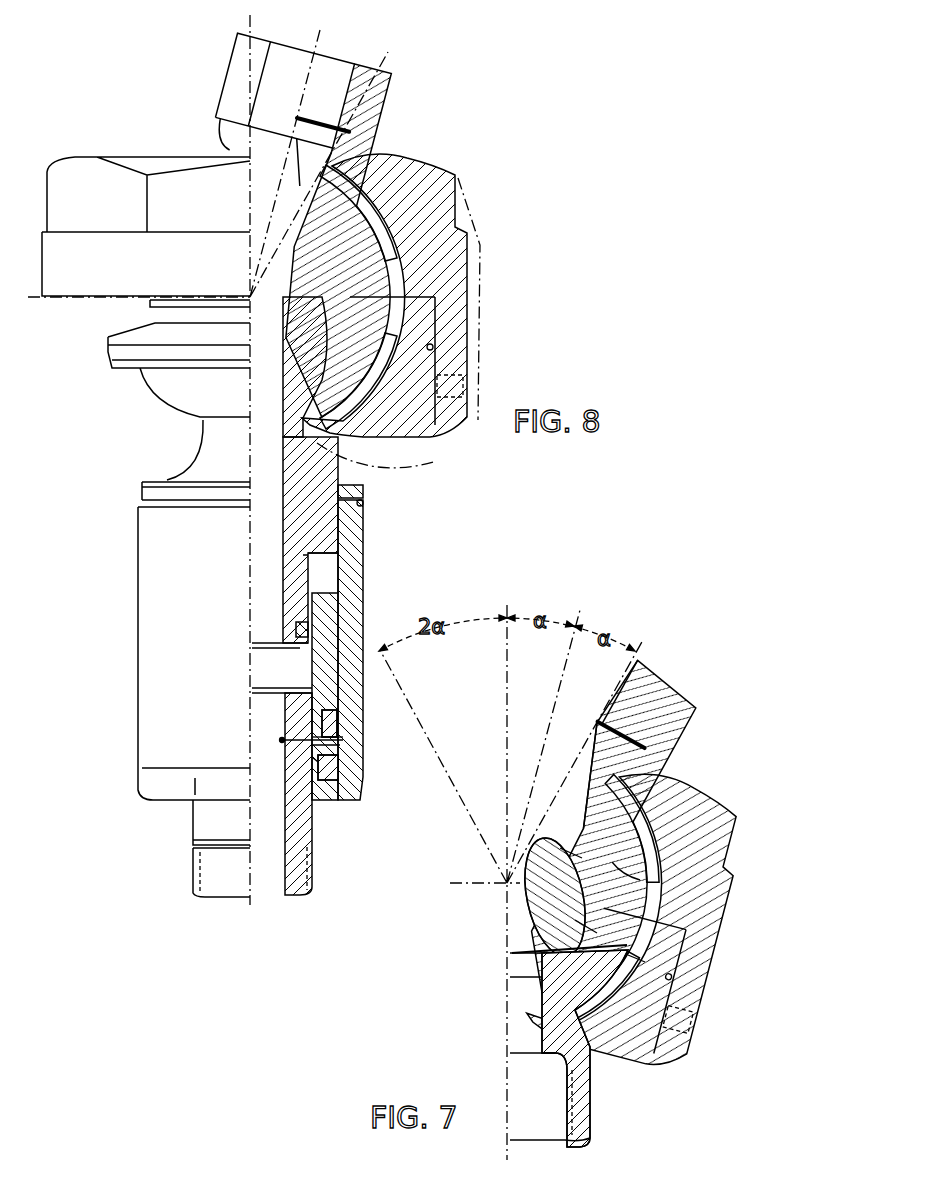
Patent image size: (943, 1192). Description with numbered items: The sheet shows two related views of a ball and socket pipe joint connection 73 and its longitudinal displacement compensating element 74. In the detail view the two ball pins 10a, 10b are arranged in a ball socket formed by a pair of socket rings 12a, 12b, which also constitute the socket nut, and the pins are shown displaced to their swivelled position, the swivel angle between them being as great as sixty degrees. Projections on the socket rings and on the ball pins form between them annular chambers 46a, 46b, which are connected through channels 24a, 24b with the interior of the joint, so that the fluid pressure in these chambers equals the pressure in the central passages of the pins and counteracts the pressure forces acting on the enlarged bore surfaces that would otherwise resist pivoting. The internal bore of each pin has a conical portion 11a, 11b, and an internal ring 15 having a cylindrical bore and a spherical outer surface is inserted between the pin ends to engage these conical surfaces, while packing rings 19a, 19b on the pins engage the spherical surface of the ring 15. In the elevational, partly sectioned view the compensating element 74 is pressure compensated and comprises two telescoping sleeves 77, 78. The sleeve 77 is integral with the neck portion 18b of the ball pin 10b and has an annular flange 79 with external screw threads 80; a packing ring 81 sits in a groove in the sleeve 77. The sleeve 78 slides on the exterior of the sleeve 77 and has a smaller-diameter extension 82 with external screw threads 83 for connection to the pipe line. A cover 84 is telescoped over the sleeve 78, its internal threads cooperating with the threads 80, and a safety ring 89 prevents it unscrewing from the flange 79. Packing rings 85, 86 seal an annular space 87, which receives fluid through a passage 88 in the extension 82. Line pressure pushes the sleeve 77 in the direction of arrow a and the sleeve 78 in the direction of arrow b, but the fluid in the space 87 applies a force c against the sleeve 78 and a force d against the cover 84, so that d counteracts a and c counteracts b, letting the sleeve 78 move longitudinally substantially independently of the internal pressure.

In FIG. 8, the ball and socket pipe joint connection 73 is at (60, 150).
In FIG. 7, the ball and socket pipe joint connection 73 is at (703, 1007).
In FIG. 8, the ball pin 10a is at (327, 217).
In FIG. 7, the ball pin 10a is at (600, 817).
In FIG. 8, the ball pin 10b is at (303, 395).
In FIG. 7, the ball pin 10b is at (560, 993).
In FIG. 8, the socket ring 12a is at (440, 188).
In FIG. 7, the socket ring 12a is at (690, 800).
In FIG. 8, the socket ring 12b is at (433, 437).
In FIG. 7, the socket ring 12b is at (622, 1040).
In FIG. 8, the annular chamber 46a is at (378, 224).
In FIG. 7, the annular chamber 46a is at (648, 835).
In FIG. 8, the annular chamber 46b is at (360, 386).
In FIG. 7, the annular chamber 46b is at (597, 993).
In FIG. 8, the neck portion 18b is at (290, 438).
In FIG. 8, the longitudinal displacement compensating element 74 is at (135, 624).
In FIG. 8, the annular flange 79 is at (298, 515).
In FIG. 8, the sleeve 77 is at (290, 575).
In FIG. 8, the sleeve 78 is at (322, 605).
In FIG. 8, the external screw threads 80 is at (364, 490).
In FIG. 8, the packing ring 81 is at (298, 625).
In FIG. 8, the extension 82 is at (300, 828).
In FIG. 8, the external screw threads 83 is at (192, 872).
In FIG. 8, the cover 84 is at (352, 562).
In FIG. 8, the packing ring 85 is at (325, 723).
In FIG. 8, the packing ring 86 is at (332, 768).
In FIG. 8, the annular space 87 is at (338, 748).
In FIG. 8, the passage 88 is at (280, 740).
In FIG. 8, the safety ring 89 is at (365, 503).
In FIG. 8, the arrow a is at (292, 648).
In FIG. 8, the arrow b is at (298, 693).
In FIG. 8, the force c is at (343, 737).
In FIG. 8, the force d is at (315, 757).
In FIG. 7, the conical portion 11a is at (583, 825).
In FIG. 7, the conical portion 11b is at (540, 970).
In FIG. 7, the internal ring 15 is at (540, 898).
In FIG. 7, the packing ring 19a is at (575, 867).
In FIG. 7, the packing ring 19b is at (585, 927).
In FIG. 7, the channel 24a is at (620, 870).
In FIG. 7, the channel 24b is at (635, 960).